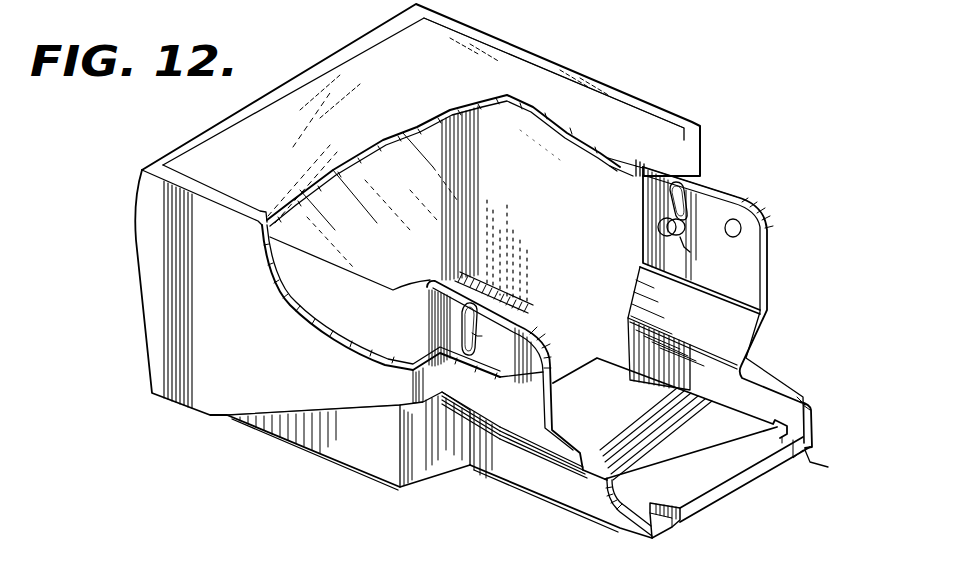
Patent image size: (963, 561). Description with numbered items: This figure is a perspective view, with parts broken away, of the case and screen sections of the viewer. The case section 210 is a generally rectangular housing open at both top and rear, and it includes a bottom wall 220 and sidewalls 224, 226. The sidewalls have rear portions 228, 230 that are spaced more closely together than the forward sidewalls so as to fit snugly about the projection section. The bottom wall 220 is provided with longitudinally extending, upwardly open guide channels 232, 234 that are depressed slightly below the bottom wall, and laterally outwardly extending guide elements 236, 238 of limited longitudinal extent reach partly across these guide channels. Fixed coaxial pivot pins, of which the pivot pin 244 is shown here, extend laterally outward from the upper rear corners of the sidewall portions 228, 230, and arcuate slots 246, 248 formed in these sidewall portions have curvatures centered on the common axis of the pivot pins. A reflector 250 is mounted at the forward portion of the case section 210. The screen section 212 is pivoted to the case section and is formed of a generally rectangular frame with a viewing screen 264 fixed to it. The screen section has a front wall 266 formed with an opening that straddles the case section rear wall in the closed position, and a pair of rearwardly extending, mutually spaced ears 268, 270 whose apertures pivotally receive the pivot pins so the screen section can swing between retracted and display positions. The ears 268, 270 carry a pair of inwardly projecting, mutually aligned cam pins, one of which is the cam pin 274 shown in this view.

The case section 210 is at (340, 476).
The screen section 212 is at (603, 68).
The bottom wall 220 is at (500, 308).
The sidewall 224 is at (544, 181).
The sidewall 226 is at (297, 433).
The rear portion of sidewall 228 is at (538, 404).
The rear portion of sidewall 230 is at (743, 205).
The guide channel 232 is at (680, 534).
The guide channel 234 is at (776, 479).
The guide element 236 is at (615, 520).
The guide element 238 is at (767, 415).
The pivot pin 244 is at (741, 228).
The arcuate slot 246 is at (478, 340).
The arcuate slot 248 is at (670, 205).
The reflector 250 is at (445, 205).
The viewing screen 264 is at (510, 62).
The front wall 266 is at (418, 380).
The ear 268 is at (447, 392).
The ear 270 is at (735, 180).
The cam pin 274 is at (710, 251).